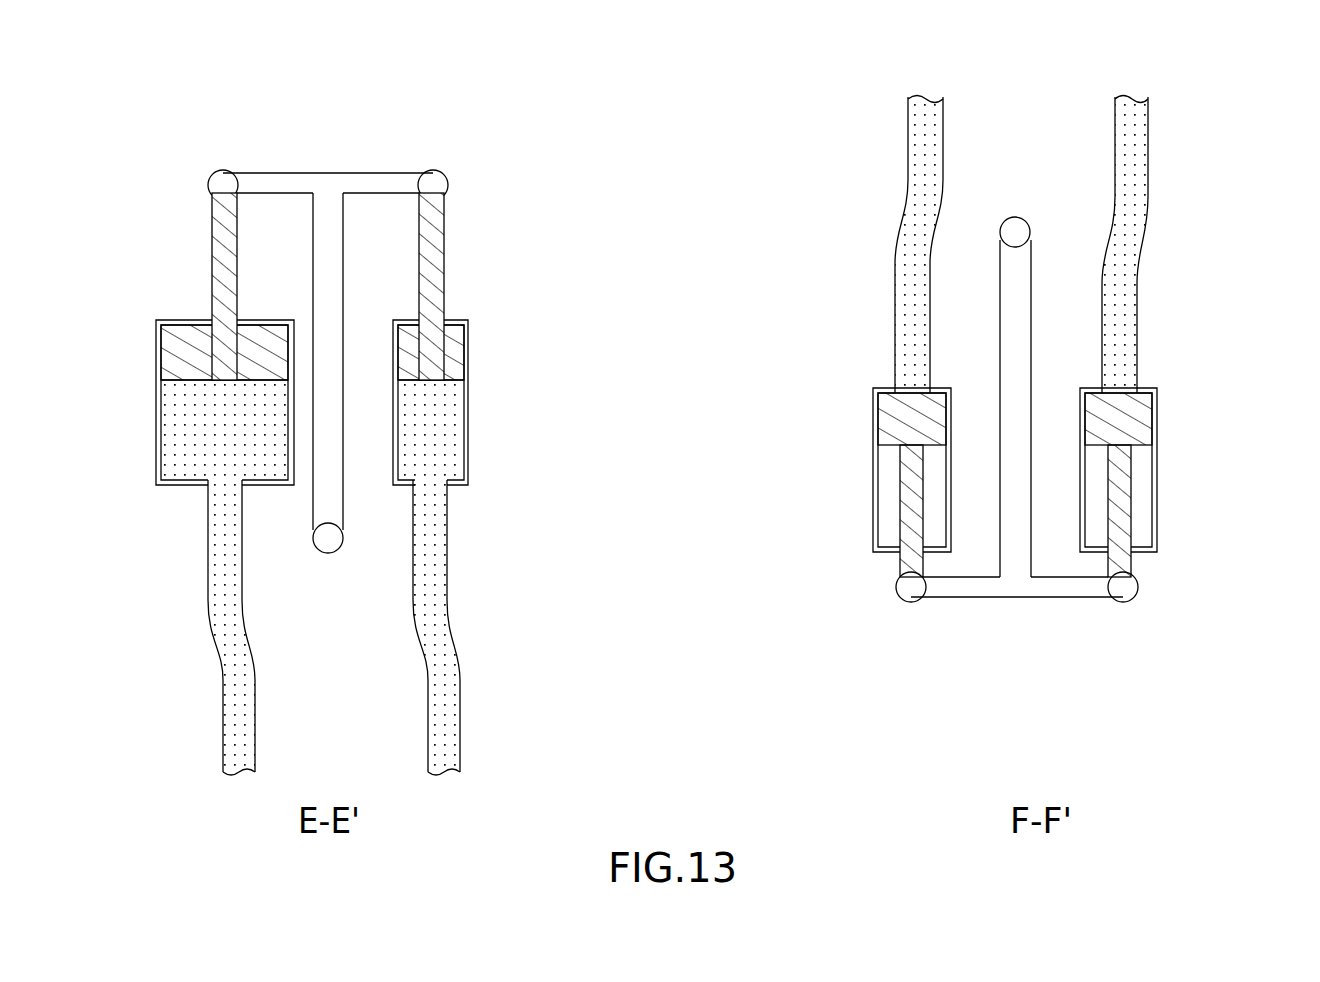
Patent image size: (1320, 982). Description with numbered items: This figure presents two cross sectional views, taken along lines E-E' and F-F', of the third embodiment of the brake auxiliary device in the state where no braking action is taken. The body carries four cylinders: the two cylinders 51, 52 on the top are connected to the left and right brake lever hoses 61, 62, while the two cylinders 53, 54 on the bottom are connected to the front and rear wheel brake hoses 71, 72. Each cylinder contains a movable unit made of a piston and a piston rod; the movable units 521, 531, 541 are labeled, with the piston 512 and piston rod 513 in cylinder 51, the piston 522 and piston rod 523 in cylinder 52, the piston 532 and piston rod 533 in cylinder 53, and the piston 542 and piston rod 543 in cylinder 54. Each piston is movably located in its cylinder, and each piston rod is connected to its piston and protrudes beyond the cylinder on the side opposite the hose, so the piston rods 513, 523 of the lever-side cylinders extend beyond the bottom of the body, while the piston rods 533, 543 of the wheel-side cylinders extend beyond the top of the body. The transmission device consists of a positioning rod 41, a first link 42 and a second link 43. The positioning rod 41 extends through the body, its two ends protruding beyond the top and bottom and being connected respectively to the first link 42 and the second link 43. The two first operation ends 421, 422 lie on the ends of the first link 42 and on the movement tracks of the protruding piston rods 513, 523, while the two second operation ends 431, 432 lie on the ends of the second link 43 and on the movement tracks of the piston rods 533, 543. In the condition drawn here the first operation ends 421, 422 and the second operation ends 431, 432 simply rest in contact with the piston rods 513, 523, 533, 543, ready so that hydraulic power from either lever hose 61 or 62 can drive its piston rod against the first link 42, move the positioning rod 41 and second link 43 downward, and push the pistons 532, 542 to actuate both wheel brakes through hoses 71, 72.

The positioning rod 41 is at (327, 388).
The first link 42 is at (1027, 634).
The first operation end 421 is at (1125, 588).
The first operation end 422 is at (912, 588).
The second link 43 is at (338, 139).
The second operation end 431 is at (437, 182).
The second operation end 432 is at (225, 182).
The cylinder 51 is at (1198, 459).
The piston 512 is at (1145, 418).
The piston rod 513 is at (1130, 510).
The cylinder 52 is at (823, 459).
The movable unit 521 is at (820, 485).
The piston 522 is at (885, 410).
The piston rod 523 is at (902, 523).
The cylinder 53 is at (523, 348).
The movable unit 531 is at (526, 286).
The piston 532 is at (462, 360).
The piston rod 533 is at (440, 222).
The cylinder 54 is at (150, 347).
The movable unit 541 is at (147, 286).
The piston 542 is at (163, 367).
The piston rod 543 is at (213, 222).
The left brake lever hose 61 is at (1147, 143).
The right brake lever hose 62 is at (910, 155).
The front wheel brake hose 71 is at (460, 670).
The rear wheel brake hose 72 is at (220, 662).